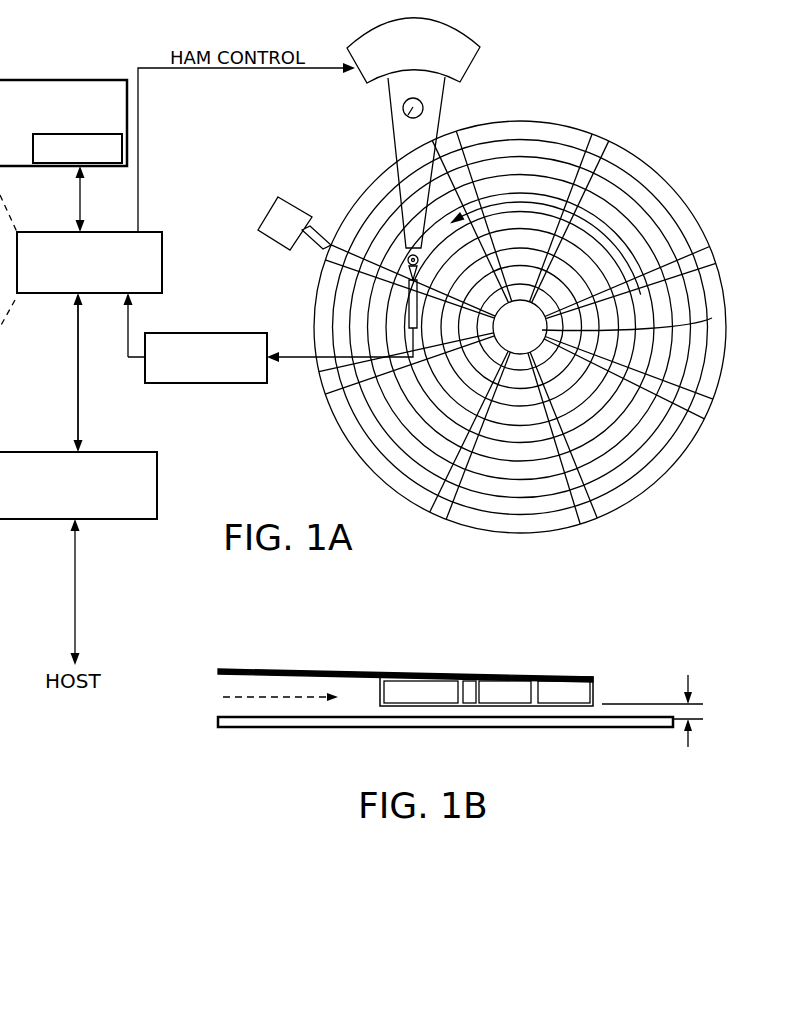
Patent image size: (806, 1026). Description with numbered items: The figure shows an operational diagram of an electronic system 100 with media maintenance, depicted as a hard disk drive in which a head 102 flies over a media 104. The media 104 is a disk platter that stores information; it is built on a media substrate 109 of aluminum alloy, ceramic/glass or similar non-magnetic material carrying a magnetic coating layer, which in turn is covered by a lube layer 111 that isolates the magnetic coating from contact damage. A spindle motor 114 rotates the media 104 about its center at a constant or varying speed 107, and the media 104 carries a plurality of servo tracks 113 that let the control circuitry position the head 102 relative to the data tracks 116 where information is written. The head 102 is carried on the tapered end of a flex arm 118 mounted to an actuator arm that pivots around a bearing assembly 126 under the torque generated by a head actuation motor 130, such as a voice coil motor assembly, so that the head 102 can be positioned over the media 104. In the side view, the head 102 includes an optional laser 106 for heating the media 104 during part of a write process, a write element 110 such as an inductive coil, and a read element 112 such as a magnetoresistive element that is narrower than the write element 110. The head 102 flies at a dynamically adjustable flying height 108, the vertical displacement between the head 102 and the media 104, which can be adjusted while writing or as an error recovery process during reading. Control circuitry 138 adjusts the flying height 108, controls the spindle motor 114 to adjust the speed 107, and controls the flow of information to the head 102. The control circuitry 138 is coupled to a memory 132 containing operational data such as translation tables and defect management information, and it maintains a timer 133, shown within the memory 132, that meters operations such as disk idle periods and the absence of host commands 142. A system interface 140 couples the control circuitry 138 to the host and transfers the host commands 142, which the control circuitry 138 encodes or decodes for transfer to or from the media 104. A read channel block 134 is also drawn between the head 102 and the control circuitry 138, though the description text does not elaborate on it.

In FIG. 1A, the electronic system 100 is at (655, 28).
In FIG. 1A, the head 102 is at (412, 328).
In FIG. 1B, the head 102 is at (608, 688).
In FIG. 1A, the media 104 is at (655, 171).
In FIG. 1B, the media 104 is at (302, 746).
In FIG. 1B, the laser 106 is at (442, 677).
In FIG. 1A, the speed 107 is at (526, 200).
In FIG. 1B, the speed 107 is at (235, 698).
In FIG. 1B, the flying height 108 is at (693, 678).
In FIG. 1B, the media substrate 109 is at (218, 723).
In FIG. 1B, the write element 110 is at (522, 678).
In FIG. 1B, the lube layer 111 is at (482, 728).
In FIG. 1B, the read element 112 is at (587, 678).
In FIG. 1A, the servo tracks 113 is at (585, 493).
In FIG. 1A, the spindle motor 114 is at (712, 318).
In FIG. 1A, the data tracks 116 is at (613, 437).
In FIG. 1A, the flex arm 118 is at (405, 284).
In FIG. 1B, the flex arm 118 is at (332, 670).
In FIG. 1A, the bearing assembly 126 is at (410, 117).
In FIG. 1A, the head actuation motor 130 is at (443, 47).
In FIG. 1A, the memory 132 is at (17, 93).
In FIG. 1A, the timer 133 is at (113, 153).
In FIG. 1A, the read channel 134 is at (162, 375).
In FIG. 1A, the control circuitry 138 is at (153, 247).
In FIG. 1A, the system interface 140 is at (90, 510).
In FIG. 1A, the host commands 142 is at (78, 377).